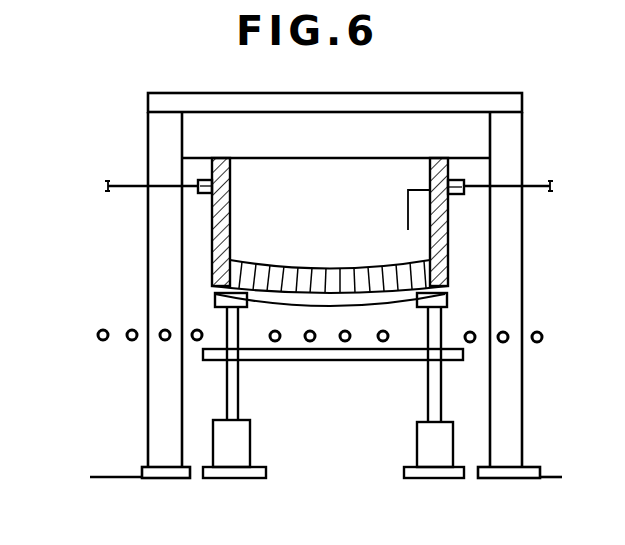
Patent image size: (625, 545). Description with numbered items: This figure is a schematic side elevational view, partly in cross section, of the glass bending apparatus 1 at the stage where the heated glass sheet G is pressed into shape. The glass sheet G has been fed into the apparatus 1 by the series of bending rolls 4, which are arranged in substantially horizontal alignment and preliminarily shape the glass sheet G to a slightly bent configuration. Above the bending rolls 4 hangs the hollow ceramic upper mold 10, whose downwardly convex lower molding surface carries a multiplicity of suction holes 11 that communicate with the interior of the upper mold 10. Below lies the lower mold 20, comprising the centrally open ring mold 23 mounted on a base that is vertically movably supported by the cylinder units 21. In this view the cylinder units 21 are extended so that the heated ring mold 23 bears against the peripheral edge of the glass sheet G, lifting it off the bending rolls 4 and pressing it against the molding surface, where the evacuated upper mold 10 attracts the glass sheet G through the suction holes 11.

The apparatus 1 is at (70, 148).
The upper mold 10 is at (449, 226).
The suction holes 11 is at (330, 268).
The glass sheet G is at (218, 289).
The ring mold 23 is at (448, 299).
The lower mold 20 is at (333, 361).
The bending rolls 4 is at (383, 342).
The cylinder units 21 is at (232, 455).